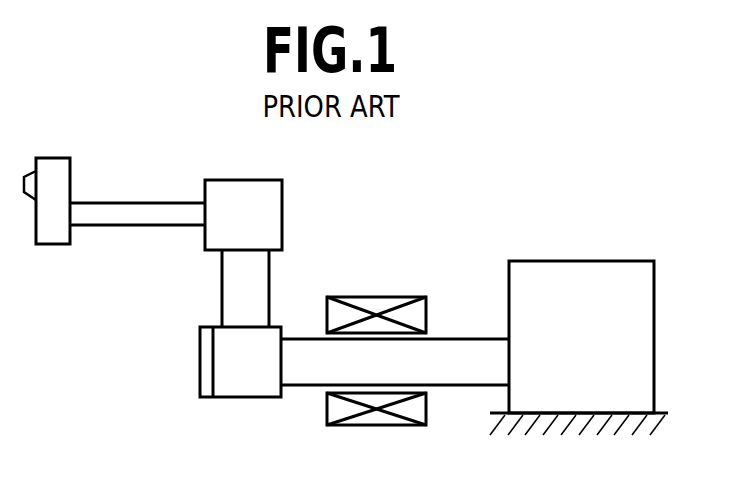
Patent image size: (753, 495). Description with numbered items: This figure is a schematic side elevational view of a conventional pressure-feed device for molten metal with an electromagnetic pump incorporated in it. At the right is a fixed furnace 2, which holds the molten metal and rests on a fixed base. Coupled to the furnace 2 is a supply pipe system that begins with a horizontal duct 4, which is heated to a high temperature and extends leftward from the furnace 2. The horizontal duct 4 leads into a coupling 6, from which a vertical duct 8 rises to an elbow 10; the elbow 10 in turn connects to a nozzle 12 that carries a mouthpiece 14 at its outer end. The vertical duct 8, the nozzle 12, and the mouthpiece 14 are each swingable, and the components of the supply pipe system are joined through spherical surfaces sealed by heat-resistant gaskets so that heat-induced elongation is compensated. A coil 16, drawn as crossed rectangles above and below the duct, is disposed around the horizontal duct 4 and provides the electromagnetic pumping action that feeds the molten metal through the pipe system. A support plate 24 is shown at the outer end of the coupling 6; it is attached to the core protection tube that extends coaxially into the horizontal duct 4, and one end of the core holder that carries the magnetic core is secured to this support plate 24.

The fixed furnace 2 is at (645, 317).
The horizontal duct 4 is at (447, 353).
The coupling 6 is at (257, 380).
The vertical duct 8 is at (257, 290).
The elbow 10 is at (272, 208).
The nozzle 12 is at (108, 217).
The mouthpiece 14 is at (65, 167).
The coil 16 is at (382, 413).
The support plate 24 is at (205, 365).